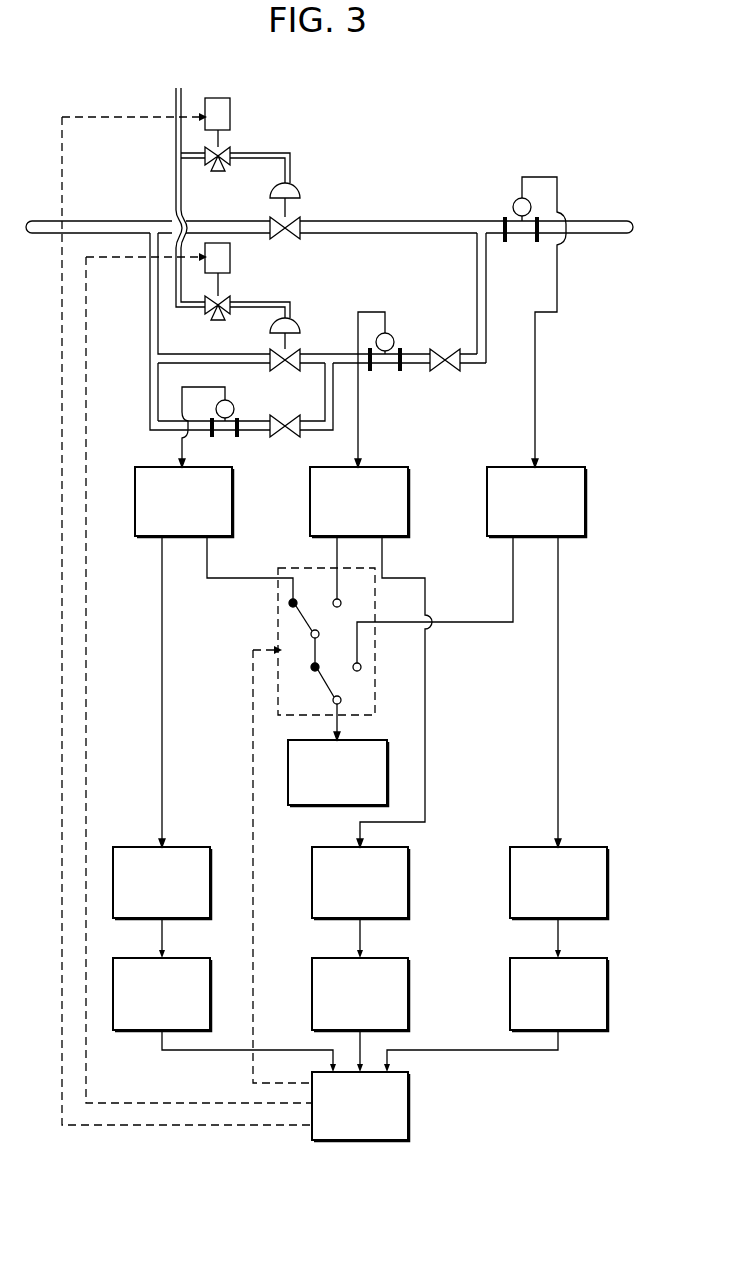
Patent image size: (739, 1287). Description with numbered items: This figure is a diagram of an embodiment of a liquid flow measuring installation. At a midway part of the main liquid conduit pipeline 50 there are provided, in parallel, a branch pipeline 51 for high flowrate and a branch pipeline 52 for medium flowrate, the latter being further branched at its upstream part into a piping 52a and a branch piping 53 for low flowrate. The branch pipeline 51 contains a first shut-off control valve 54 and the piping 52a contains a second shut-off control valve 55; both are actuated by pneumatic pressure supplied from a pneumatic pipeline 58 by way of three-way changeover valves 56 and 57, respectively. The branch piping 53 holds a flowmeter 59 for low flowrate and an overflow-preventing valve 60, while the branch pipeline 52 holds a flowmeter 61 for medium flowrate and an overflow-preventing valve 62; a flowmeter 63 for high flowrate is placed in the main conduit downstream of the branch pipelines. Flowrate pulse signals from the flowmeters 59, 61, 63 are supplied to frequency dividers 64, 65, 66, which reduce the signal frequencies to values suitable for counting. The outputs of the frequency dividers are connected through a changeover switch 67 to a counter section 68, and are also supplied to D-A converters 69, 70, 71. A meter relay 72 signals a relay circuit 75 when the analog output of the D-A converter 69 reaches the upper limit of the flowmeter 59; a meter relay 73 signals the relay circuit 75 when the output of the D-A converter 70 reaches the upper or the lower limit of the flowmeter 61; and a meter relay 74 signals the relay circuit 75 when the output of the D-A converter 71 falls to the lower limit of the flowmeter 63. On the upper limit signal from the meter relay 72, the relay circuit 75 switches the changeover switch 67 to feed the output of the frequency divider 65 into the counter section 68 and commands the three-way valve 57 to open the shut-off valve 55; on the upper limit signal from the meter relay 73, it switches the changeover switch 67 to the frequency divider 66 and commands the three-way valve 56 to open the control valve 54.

The main liquid conduit pipeline 50 is at (108, 220).
The branch pipeline for high flowrate 51 is at (471, 221).
The branch pipeline for medium flowrate 52 is at (416, 366).
The piping 52a is at (317, 354).
The branch piping for low flowrate 53 is at (333, 432).
The first shut-off control valve 54 is at (300, 218).
The second shut-off control valve 55 is at (268, 352).
The three-way changeover valve 56 is at (226, 150).
The three-way changeover valve 57 is at (226, 300).
The pneumatic pipeline 58 is at (176, 100).
The flowmeter for low flowrate 59 is at (233, 404).
The overflow-preventing valve 60 is at (290, 438).
The flowmeter for medium flowrate 61 is at (390, 340).
The overflow-preventing valve 62 is at (444, 349).
The flowmeter for high flowrate 63 is at (537, 207).
The frequency divider 64 is at (150, 467).
The frequency divider 65 is at (396, 467).
The frequency divider 66 is at (572, 467).
The changeover switch 67 is at (278, 615).
The counter section 68 is at (388, 756).
The D-A converter 69 is at (137, 845).
The D-A converter 70 is at (334, 847).
The D-A converter 71 is at (531, 847).
The meter relay 72 is at (197, 958).
The meter relay 73 is at (396, 958).
The meter relay 74 is at (595, 958).
The relay circuit 75 is at (408, 1112).